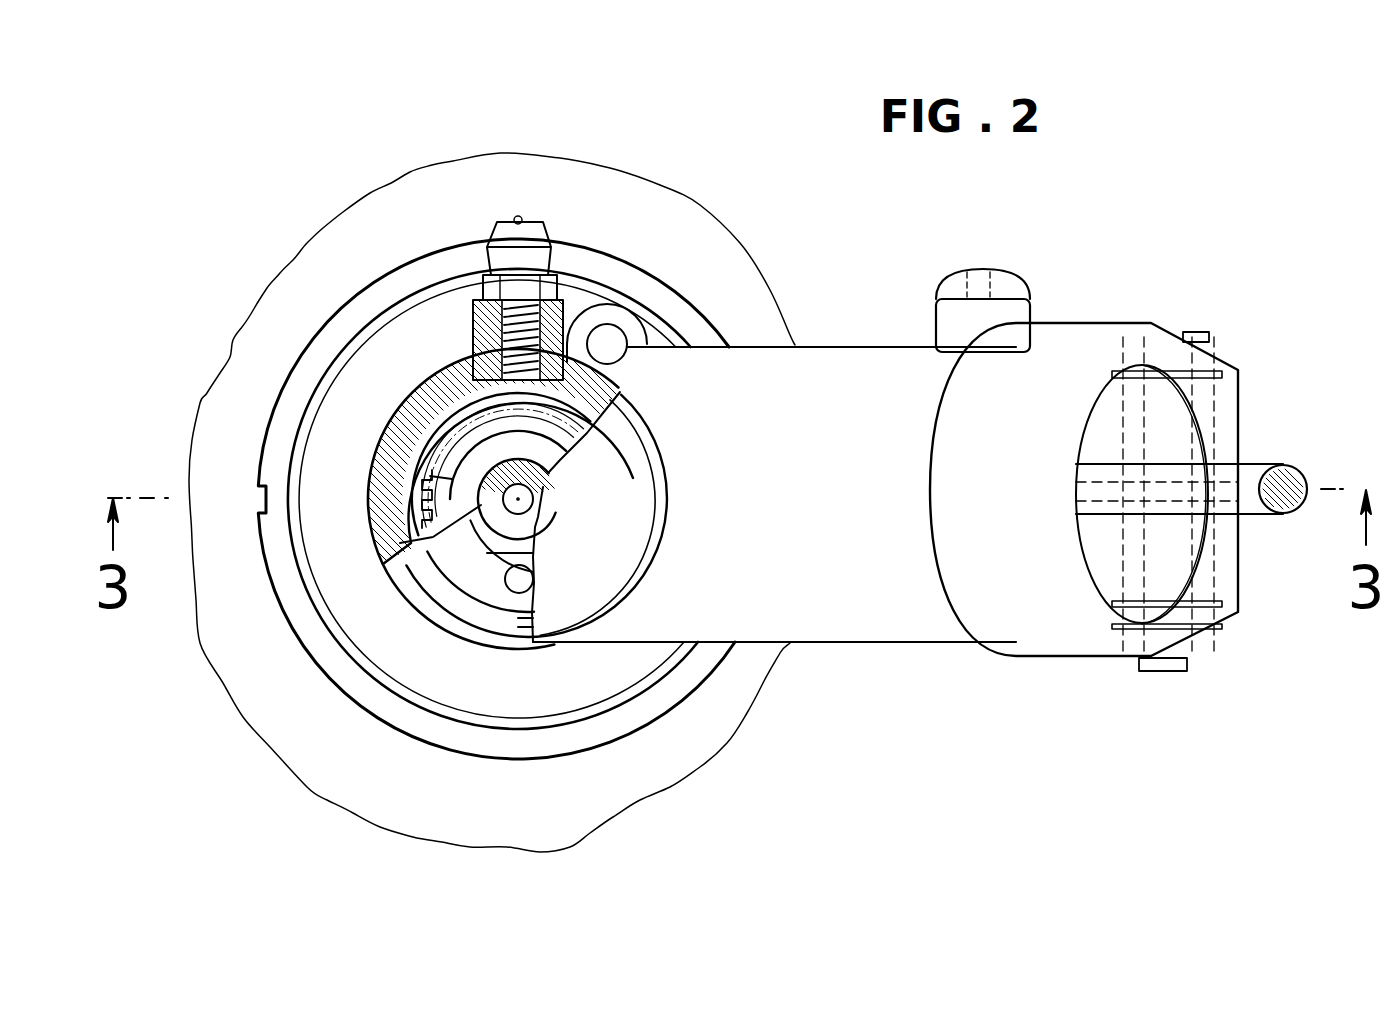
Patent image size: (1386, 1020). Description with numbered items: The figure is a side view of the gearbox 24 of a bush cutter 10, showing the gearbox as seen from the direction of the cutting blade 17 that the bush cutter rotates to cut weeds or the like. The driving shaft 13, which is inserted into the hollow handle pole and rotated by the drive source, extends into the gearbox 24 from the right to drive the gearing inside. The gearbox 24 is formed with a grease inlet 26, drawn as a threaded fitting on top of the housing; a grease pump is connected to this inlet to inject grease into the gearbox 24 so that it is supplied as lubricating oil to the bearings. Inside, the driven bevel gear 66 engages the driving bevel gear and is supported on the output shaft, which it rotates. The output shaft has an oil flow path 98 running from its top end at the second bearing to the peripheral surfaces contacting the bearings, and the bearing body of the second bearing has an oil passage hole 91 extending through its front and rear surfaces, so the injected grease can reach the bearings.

The bush cutter 10 is at (348, 143).
The cutting blade 17 is at (446, 200).
The grease inlet 26 is at (512, 320).
The driven bevel gear 66 is at (443, 479).
The gearbox 24 is at (371, 541).
The oil flow path 98 is at (513, 507).
The oil passage hole 91 is at (518, 594).
The driving shaft 13 is at (1272, 462).